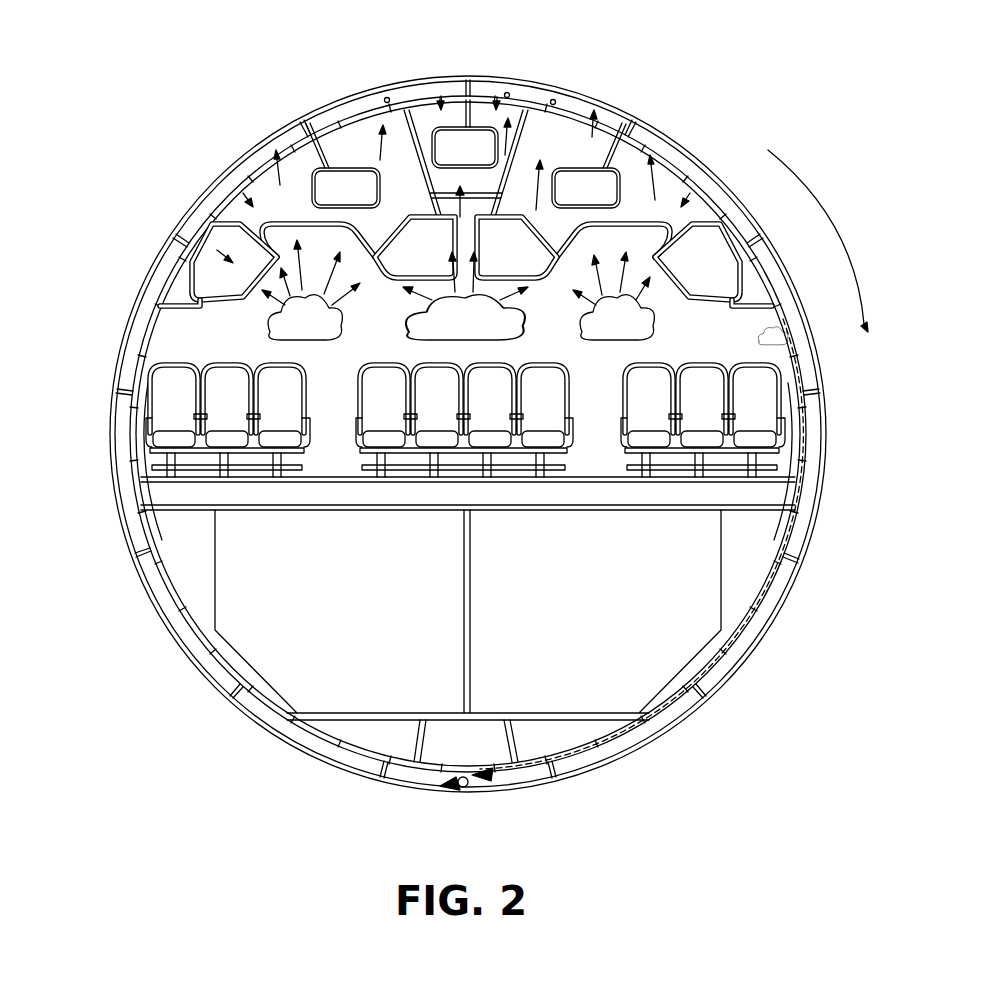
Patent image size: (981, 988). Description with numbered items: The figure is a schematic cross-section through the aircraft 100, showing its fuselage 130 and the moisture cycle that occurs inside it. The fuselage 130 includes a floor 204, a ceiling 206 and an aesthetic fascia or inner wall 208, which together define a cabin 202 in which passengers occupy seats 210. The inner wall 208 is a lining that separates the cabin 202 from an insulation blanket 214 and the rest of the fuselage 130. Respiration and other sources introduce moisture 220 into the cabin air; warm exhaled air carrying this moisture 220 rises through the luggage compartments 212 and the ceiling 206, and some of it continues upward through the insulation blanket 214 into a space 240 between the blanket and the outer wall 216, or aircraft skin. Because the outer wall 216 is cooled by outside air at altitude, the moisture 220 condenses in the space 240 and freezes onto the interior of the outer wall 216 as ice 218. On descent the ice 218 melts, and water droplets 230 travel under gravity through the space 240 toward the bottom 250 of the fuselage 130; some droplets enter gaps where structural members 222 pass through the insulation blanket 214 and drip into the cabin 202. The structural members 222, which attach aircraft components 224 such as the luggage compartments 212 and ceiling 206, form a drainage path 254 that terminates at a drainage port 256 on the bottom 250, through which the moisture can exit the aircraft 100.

The aircraft 100 is at (206, 94).
The fuselage 130 is at (703, 172).
The cabin 202 is at (200, 298).
The floor 204 is at (772, 490).
The ceiling 206 is at (678, 226).
The inner wall 208 is at (776, 326).
The seats 210 is at (211, 375).
The luggage compartments 212 is at (208, 272).
The insulation blanket 214 is at (250, 178).
The outer wall 216 is at (338, 93).
The ice 218 is at (471, 79).
The moisture 220 is at (320, 323).
The structural members 222 is at (628, 132).
The aircraft components 224 is at (449, 162).
The water droplets 230 is at (558, 101).
The space 240 is at (321, 100).
The bottom 250 is at (452, 787).
The drainage path 254 is at (583, 773).
The drainage port 256 is at (465, 790).